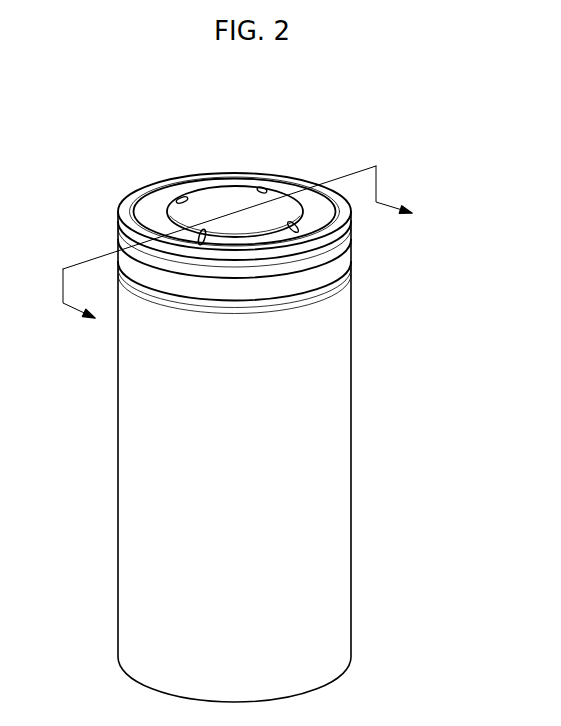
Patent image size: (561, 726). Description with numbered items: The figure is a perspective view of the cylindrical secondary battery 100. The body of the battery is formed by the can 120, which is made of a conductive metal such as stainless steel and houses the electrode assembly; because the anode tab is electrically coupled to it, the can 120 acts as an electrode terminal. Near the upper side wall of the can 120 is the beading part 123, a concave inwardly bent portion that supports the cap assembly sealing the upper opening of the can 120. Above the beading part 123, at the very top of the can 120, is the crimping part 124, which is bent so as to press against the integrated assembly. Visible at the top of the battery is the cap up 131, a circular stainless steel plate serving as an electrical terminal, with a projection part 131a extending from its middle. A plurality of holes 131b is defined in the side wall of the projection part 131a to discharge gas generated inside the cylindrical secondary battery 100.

The cylindrical secondary battery 100 is at (246, 391).
The can 120 is at (327, 453).
The beading part 123 is at (343, 285).
The crimping part 124 is at (120, 212).
The cap up 131 is at (163, 202).
The projection part 131a is at (225, 193).
The holes 131b is at (262, 187).